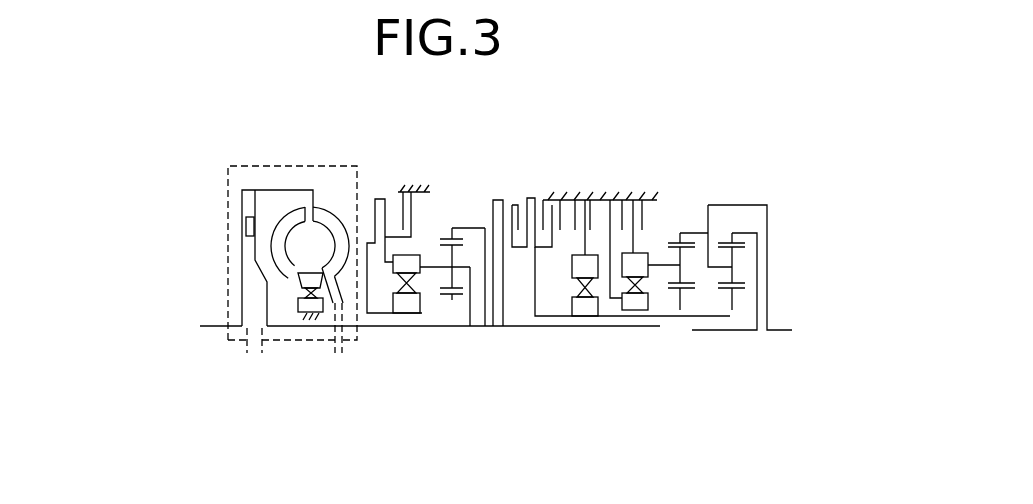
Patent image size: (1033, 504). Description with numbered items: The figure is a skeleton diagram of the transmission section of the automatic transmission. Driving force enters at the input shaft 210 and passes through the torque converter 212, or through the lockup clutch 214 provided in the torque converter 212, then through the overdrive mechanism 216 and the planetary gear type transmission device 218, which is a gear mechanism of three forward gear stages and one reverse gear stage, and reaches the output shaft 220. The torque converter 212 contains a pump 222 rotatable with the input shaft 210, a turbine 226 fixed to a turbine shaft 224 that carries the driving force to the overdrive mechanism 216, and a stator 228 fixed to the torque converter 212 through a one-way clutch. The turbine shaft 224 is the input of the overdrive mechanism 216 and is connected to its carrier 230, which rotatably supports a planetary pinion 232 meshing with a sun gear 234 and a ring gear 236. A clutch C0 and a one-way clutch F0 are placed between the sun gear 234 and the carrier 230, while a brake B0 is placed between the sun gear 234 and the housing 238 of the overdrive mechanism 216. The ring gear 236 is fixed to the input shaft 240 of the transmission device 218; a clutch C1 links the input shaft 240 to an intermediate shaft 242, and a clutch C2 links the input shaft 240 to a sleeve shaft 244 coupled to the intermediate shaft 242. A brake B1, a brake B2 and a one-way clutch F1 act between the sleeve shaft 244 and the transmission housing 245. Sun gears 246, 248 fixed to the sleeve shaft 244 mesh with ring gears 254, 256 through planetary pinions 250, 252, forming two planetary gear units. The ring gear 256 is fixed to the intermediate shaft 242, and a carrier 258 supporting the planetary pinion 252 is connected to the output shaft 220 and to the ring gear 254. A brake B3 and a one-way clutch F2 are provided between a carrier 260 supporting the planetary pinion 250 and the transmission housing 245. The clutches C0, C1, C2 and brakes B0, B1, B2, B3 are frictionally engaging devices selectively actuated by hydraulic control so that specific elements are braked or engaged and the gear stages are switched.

The input shaft 210 is at (213, 325).
The torque converter 212 is at (293, 162).
The lockup clutch 214 is at (255, 252).
The overdrive mechanism 216 is at (438, 266).
The planetary gear type transmission device 218 is at (608, 268).
The output shaft 220 is at (783, 330).
The pump 222 is at (335, 223).
The turbine shaft 224 is at (457, 330).
The turbine 226 is at (295, 207).
The stator 228 is at (295, 288).
The carrier 230 is at (472, 297).
The planetary pinion 232 is at (441, 241).
The sun gear 234 is at (448, 305).
The ring gear 236 is at (452, 232).
The housing 238 is at (425, 195).
The input shaft 240 is at (487, 328).
The intermediate shaft 242 is at (615, 328).
The sleeve shaft 244 is at (545, 318).
The housing 245 is at (623, 198).
The sun gear 246 is at (687, 310).
The sun gear 248 is at (730, 307).
The planetary pinion 250 is at (690, 290).
The planetary pinion 252 is at (740, 277).
The ring gear 254 is at (677, 232).
The ring gear 256 is at (752, 236).
The carrier 258 is at (708, 243).
The carrier 260 is at (660, 262).
The clutch C0 is at (375, 210).
The clutch C1 is at (493, 198).
The clutch C2 is at (515, 205).
The brake B0 is at (402, 220).
The brake B1 is at (543, 203).
The brake B2 is at (575, 203).
The brake B3 is at (650, 208).
The one-way clutch F0 is at (397, 290).
The one-way clutch F1 is at (577, 283).
The one-way clutch F2 is at (648, 287).